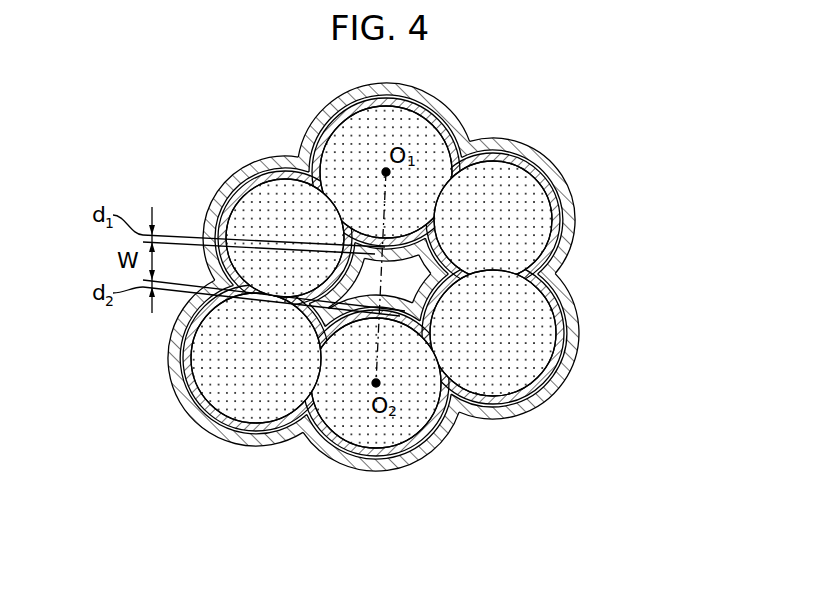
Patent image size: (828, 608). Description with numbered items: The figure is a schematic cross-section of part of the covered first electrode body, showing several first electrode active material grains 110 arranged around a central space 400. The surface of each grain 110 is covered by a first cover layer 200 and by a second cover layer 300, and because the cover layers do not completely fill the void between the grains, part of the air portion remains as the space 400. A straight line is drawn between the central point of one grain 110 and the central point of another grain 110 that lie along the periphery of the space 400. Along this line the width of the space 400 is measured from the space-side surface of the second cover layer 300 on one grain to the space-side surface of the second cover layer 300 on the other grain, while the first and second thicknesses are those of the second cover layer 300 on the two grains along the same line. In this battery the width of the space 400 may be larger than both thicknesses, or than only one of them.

The first electrode active material grains 110 is at (507, 313).
The first cover layer 200 is at (570, 386).
The second cover layer 300 is at (566, 340).
The space 400 is at (407, 273).